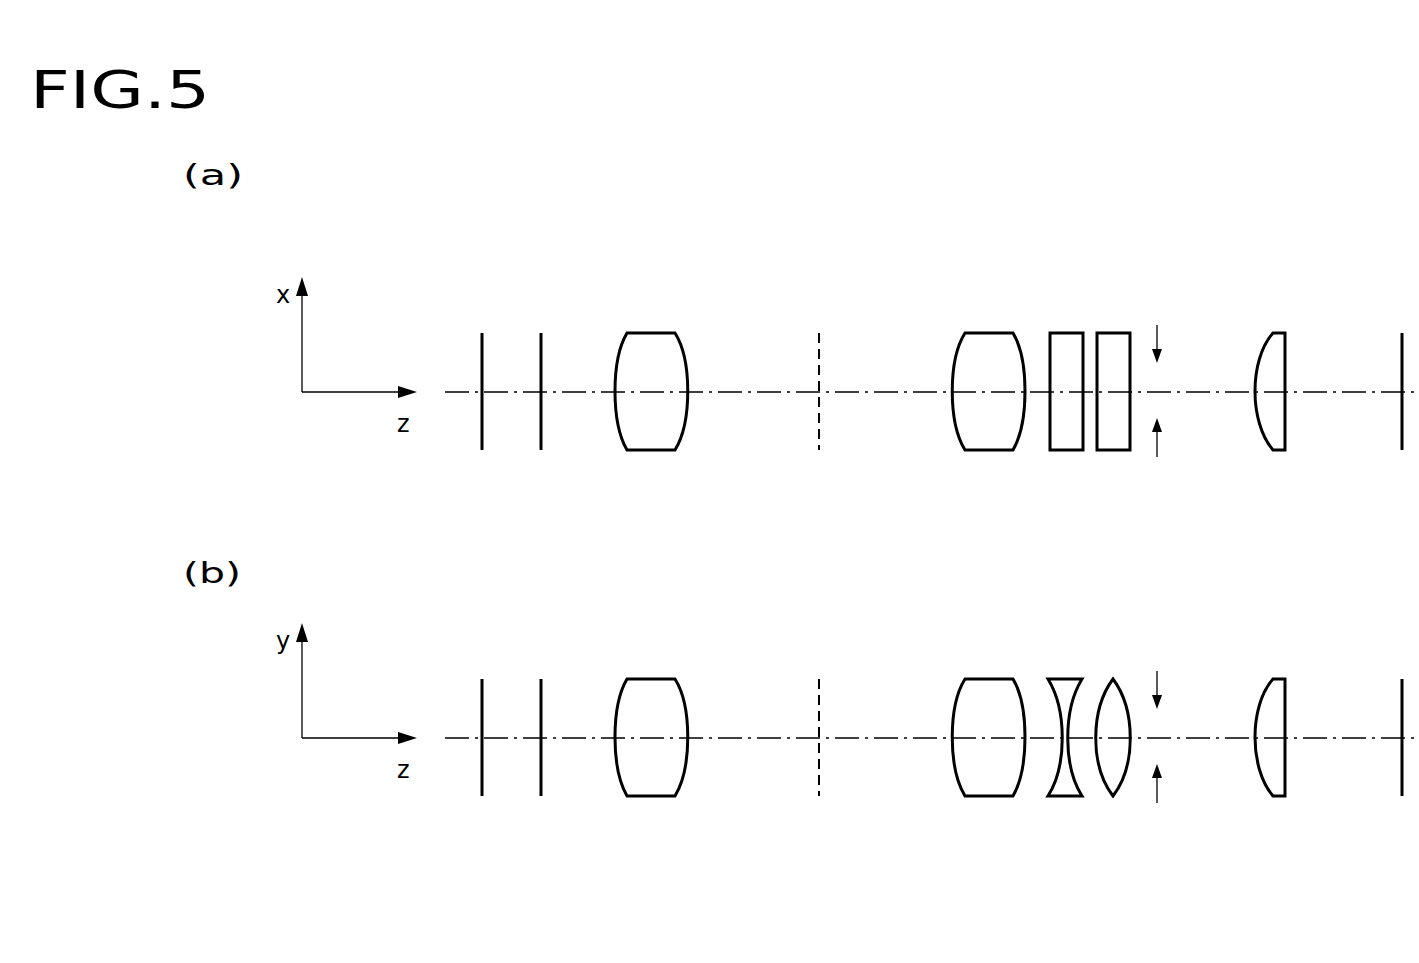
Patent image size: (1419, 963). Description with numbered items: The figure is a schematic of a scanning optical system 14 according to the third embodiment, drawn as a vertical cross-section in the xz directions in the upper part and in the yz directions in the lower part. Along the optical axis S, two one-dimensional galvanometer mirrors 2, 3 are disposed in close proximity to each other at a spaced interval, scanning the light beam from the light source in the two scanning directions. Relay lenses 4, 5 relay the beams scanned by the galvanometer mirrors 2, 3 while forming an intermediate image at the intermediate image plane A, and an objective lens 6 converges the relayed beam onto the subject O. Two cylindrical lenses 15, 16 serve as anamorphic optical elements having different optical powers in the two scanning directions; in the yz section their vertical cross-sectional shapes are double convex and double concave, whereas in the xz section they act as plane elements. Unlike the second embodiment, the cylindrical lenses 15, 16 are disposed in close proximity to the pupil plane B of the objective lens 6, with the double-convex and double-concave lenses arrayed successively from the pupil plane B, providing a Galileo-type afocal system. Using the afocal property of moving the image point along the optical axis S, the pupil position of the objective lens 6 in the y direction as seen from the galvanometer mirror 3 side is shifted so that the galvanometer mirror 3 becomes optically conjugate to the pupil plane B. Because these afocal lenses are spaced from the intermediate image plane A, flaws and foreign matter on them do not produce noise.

The one-dimensional galvanometer mirror 2 is at (478, 352).
The one-dimensional galvanometer mirror 3 is at (537, 355).
The relay lens 4 is at (655, 333).
The relay lens 5 is at (988, 333).
The objective lens 6 is at (1278, 333).
The scanning optical system 14 is at (973, 199).
The cylindrical lens 15 is at (1066, 333).
The cylindrical lens 16 is at (1112, 333).
The intermediate image plane A is at (806, 332).
The pupil plane B is at (1178, 336).
The optical axis S is at (577, 385).
The subject O is at (1400, 355).